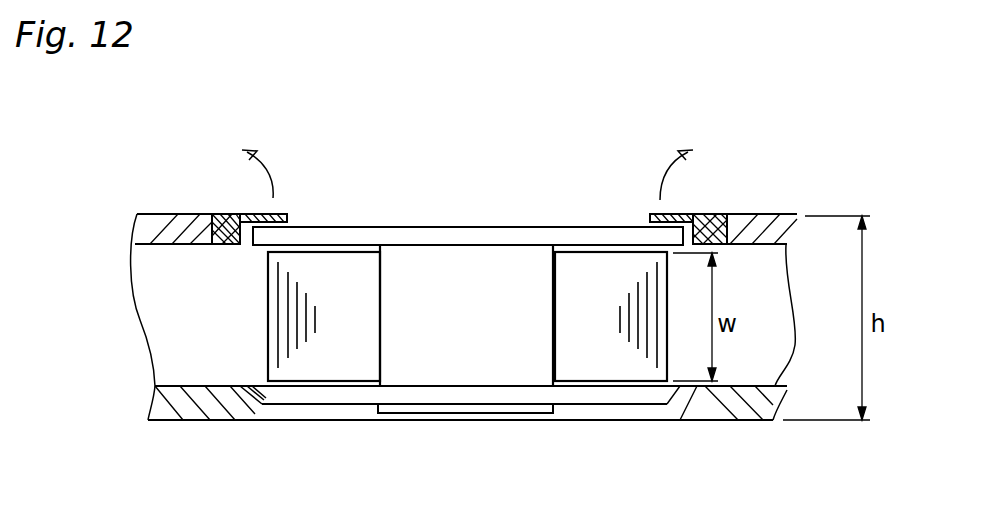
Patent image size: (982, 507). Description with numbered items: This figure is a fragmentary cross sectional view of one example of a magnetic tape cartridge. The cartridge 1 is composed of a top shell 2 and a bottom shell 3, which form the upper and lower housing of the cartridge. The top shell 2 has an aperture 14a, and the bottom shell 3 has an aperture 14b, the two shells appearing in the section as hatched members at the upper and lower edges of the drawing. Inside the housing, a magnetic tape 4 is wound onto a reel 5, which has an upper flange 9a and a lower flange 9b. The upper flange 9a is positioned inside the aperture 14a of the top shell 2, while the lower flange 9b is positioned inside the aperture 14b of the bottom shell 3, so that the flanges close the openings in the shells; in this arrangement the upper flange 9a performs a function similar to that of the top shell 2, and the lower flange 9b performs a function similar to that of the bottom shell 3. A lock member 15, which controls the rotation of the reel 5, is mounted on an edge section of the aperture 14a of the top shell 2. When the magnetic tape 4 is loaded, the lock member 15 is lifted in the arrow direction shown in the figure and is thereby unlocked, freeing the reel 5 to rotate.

The cartridge 1 is at (541, 205).
The top shell 2 is at (180, 228).
The bottom shell 3 is at (197, 405).
The magnetic tape 4 is at (320, 362).
The reel 5 is at (430, 372).
The upper flange 9a is at (594, 237).
The lower flange 9b is at (618, 396).
The aperture 14a is at (247, 238).
The aperture 14b is at (260, 412).
The lock member 15 is at (230, 218).